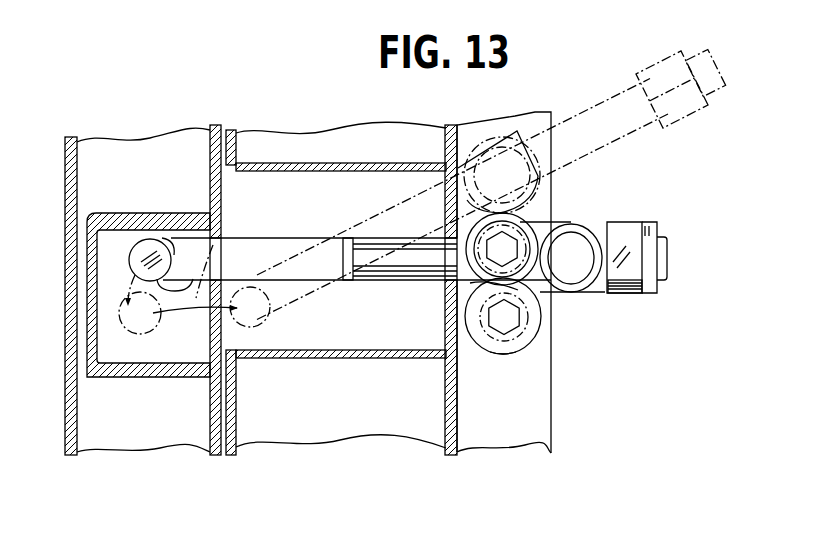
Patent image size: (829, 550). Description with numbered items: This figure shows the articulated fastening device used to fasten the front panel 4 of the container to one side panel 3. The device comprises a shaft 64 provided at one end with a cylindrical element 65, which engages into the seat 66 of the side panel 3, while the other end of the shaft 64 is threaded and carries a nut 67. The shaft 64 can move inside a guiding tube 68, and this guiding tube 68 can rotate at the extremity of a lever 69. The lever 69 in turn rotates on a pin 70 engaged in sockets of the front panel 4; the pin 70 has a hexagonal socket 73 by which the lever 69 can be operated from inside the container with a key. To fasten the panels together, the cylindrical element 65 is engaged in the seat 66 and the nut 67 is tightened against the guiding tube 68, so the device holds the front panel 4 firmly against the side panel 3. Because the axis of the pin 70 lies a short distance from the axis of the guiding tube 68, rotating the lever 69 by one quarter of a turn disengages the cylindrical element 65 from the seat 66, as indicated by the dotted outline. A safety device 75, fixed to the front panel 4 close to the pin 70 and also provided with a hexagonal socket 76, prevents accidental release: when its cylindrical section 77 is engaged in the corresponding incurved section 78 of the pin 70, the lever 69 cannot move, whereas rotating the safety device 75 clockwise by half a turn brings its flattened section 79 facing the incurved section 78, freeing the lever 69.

The side panel 3 is at (137, 291).
The front panel 4 is at (470, 415).
The shaft 64 is at (333, 253).
The cylindrical element 65 is at (146, 253).
The seat 66 is at (176, 258).
The nut 67 is at (624, 270).
The guiding tube 68 is at (618, 220).
The lever 69 is at (585, 212).
The pin 70 is at (512, 284).
The hexagonal socket 73 is at (509, 247).
The safety device 75 is at (477, 318).
The hexagonal socket 76 is at (500, 328).
The cylindrical section 77 is at (465, 298).
The incurved section 78 is at (518, 290).
The flattened section 79 is at (505, 354).